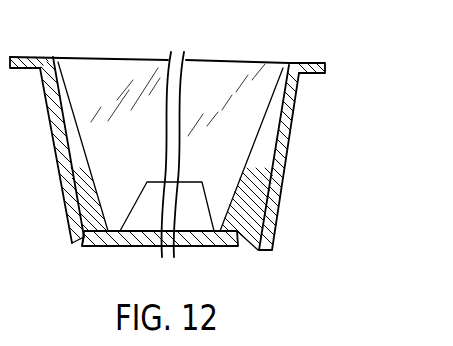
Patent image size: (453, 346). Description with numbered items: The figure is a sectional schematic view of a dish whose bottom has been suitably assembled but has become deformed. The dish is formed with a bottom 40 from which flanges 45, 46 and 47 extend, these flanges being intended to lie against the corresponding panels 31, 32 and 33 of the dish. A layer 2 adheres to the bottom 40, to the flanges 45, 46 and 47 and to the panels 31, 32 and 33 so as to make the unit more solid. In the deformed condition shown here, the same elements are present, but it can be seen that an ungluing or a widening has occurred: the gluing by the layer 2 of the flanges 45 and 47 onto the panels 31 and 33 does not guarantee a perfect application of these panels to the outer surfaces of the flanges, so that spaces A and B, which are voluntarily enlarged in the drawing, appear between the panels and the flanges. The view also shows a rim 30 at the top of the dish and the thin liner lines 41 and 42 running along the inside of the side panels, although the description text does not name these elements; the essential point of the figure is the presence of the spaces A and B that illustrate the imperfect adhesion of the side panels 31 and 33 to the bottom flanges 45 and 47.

The layer 2 is at (62, 95).
The container top flange / rim 30 is at (354, 52).
The panel 31 is at (53, 118).
The panel 32 is at (227, 92).
The panel 33 is at (294, 107).
The bottom 40 is at (212, 246).
The left liner layer 41 is at (84, 161).
The right liner layer 42 is at (252, 148).
The flange 45 is at (95, 205).
The flange 46 is at (150, 212).
The flange 47 is at (257, 207).
The space A is at (83, 235).
The space B is at (250, 244).